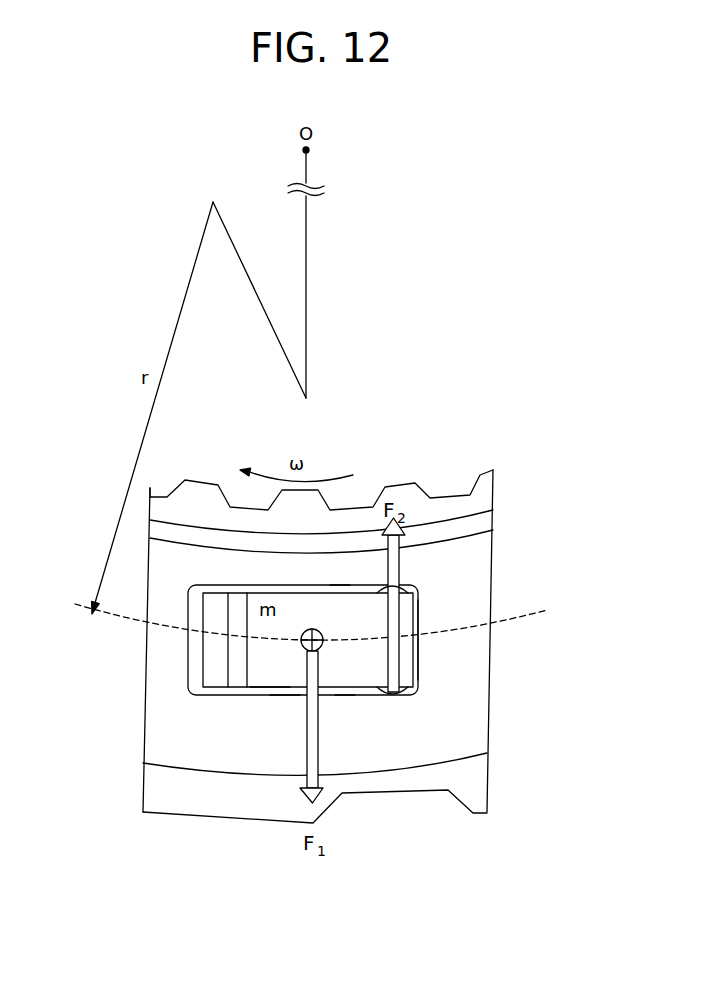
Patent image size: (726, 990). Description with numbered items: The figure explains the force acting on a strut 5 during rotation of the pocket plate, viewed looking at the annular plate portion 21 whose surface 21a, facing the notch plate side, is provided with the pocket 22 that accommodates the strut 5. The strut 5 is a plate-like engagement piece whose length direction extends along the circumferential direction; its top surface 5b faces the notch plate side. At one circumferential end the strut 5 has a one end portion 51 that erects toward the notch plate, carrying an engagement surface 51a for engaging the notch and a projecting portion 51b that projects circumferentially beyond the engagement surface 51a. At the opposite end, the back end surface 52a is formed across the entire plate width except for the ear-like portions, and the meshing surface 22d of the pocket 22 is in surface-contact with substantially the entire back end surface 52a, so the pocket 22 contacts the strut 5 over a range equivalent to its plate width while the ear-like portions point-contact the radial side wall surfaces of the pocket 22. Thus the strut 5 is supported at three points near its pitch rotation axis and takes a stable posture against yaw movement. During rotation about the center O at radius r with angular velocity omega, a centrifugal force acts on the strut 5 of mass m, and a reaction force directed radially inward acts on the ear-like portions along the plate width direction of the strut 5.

The strut 5 is at (285, 695).
The top surface 5b is at (267, 672).
The plate portion 21 is at (170, 740).
The surface 21a is at (472, 645).
The pocket 22 is at (185, 694).
The meshing surface 22d is at (418, 623).
The one end portion 51 is at (198, 672).
The engagement surface 51a is at (240, 645).
The projecting portion 51b is at (220, 660).
The back end surface 52a is at (418, 655).